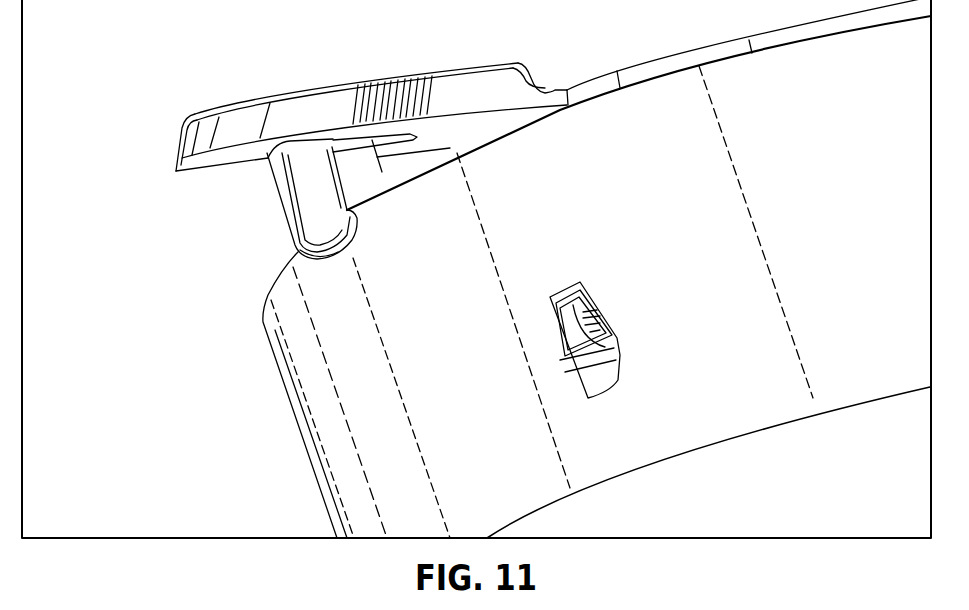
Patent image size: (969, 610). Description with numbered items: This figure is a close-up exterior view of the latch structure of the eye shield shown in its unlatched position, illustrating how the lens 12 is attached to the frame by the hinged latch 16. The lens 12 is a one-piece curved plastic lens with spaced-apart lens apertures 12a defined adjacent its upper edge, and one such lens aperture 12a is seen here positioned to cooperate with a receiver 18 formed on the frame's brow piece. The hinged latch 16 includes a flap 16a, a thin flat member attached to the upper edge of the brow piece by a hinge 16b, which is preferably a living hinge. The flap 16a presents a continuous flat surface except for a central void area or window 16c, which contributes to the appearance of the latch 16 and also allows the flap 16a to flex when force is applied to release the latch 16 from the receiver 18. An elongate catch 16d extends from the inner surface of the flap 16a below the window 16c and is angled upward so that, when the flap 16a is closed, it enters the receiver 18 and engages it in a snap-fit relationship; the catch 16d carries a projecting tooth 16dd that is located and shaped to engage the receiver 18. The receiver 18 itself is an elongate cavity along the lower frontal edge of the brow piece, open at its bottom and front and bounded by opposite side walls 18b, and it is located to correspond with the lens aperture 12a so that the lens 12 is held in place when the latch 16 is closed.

The lens 12 is at (681, 261).
The lens aperture 12a is at (619, 376).
The hinged latch 16 is at (352, 147).
The flap 16a is at (368, 80).
The hinge 16b is at (545, 92).
The window 16c is at (358, 147).
The catch 16d is at (288, 188).
The projecting tooth 16dd is at (360, 225).
The receiver 18 is at (602, 336).
The side wall 18b is at (583, 323).